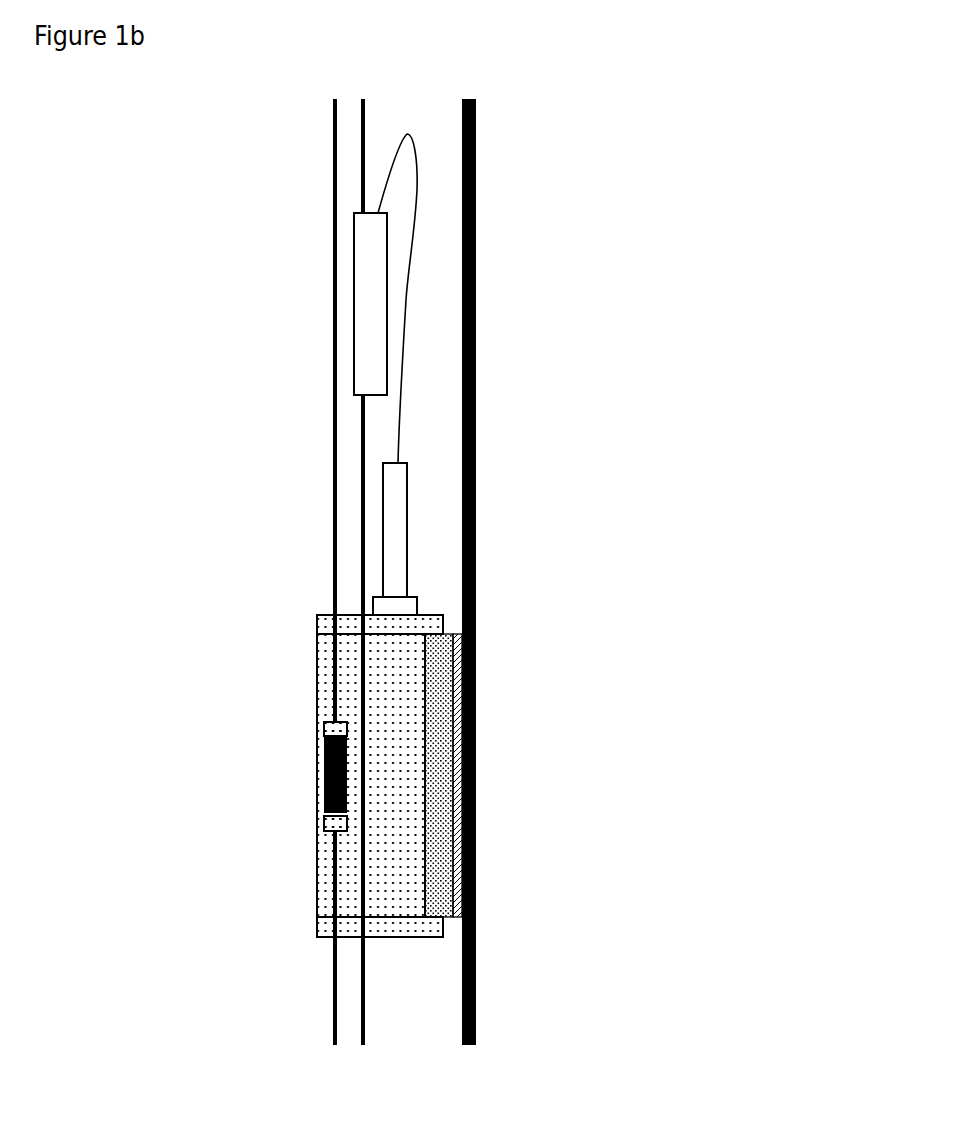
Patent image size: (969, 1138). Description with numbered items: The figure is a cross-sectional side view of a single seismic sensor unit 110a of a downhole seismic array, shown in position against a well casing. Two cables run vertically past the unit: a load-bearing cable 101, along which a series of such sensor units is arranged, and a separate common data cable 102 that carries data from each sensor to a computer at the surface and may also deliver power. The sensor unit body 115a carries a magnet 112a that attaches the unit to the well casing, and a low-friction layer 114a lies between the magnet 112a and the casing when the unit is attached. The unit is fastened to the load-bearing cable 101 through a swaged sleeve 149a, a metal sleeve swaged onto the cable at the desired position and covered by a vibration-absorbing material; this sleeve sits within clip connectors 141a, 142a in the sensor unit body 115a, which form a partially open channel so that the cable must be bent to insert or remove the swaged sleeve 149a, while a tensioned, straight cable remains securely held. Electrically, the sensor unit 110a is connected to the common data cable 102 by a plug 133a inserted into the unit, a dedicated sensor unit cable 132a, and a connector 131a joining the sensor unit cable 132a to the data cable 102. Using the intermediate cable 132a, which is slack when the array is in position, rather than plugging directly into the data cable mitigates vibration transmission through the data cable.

The load-bearing cable 101 is at (333, 273).
The data cable 102 is at (363, 447).
The seismic sensor unit 110a is at (395, 851).
The magnet 112a is at (435, 758).
The low-friction layer 114a is at (458, 786).
The sensor unit body 115a is at (407, 739).
The connector 131a is at (368, 328).
The sensor unit cable 132a is at (403, 370).
The plug 133a is at (397, 568).
The clip connector 141a is at (322, 727).
The clip connector 142a is at (322, 824).
The swaged sleeve 149a is at (322, 773).